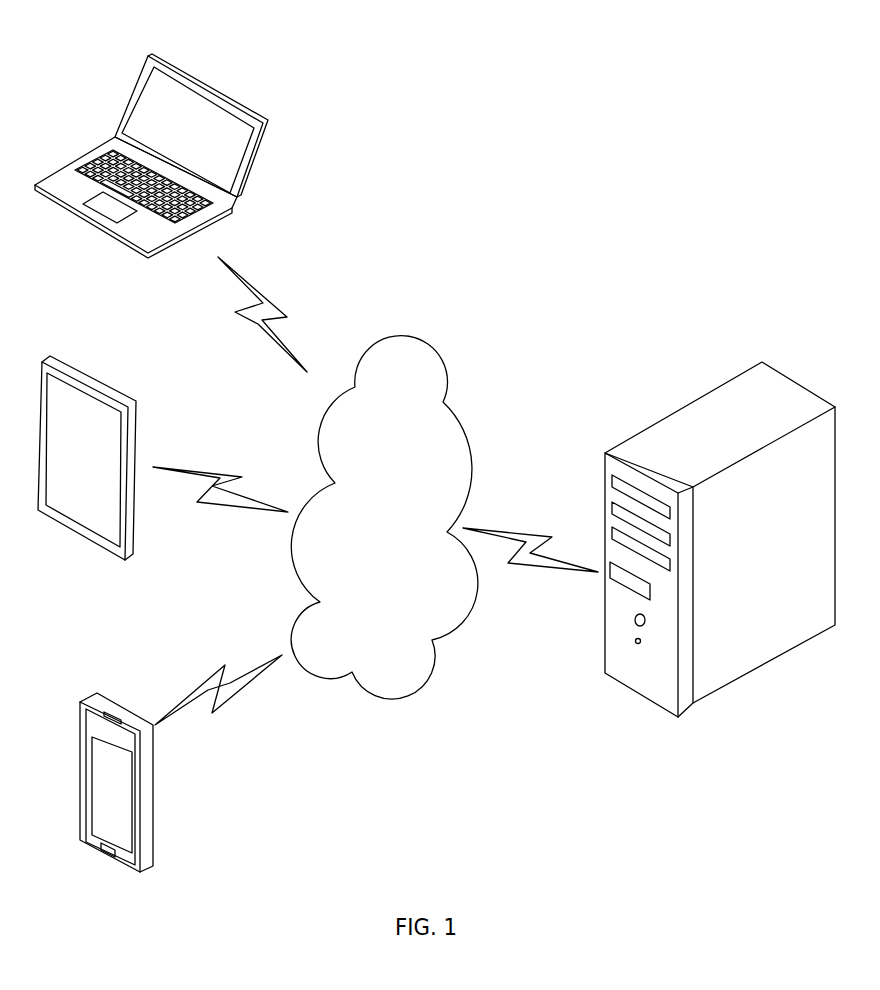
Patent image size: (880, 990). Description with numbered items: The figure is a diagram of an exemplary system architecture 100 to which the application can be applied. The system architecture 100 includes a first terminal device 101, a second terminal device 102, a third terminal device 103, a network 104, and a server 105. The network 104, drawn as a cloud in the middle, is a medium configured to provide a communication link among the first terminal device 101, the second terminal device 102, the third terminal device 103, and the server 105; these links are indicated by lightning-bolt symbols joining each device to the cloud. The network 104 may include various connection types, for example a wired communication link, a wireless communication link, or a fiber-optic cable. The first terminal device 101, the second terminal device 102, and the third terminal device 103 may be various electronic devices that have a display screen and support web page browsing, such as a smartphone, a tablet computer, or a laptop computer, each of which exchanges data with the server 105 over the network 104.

The system architecture 100 is at (495, 48).
The first terminal device 101 is at (147, 820).
The second terminal device 102 is at (92, 382).
The third terminal device 103 is at (231, 157).
The network 104 is at (407, 337).
The server 105 is at (725, 400).